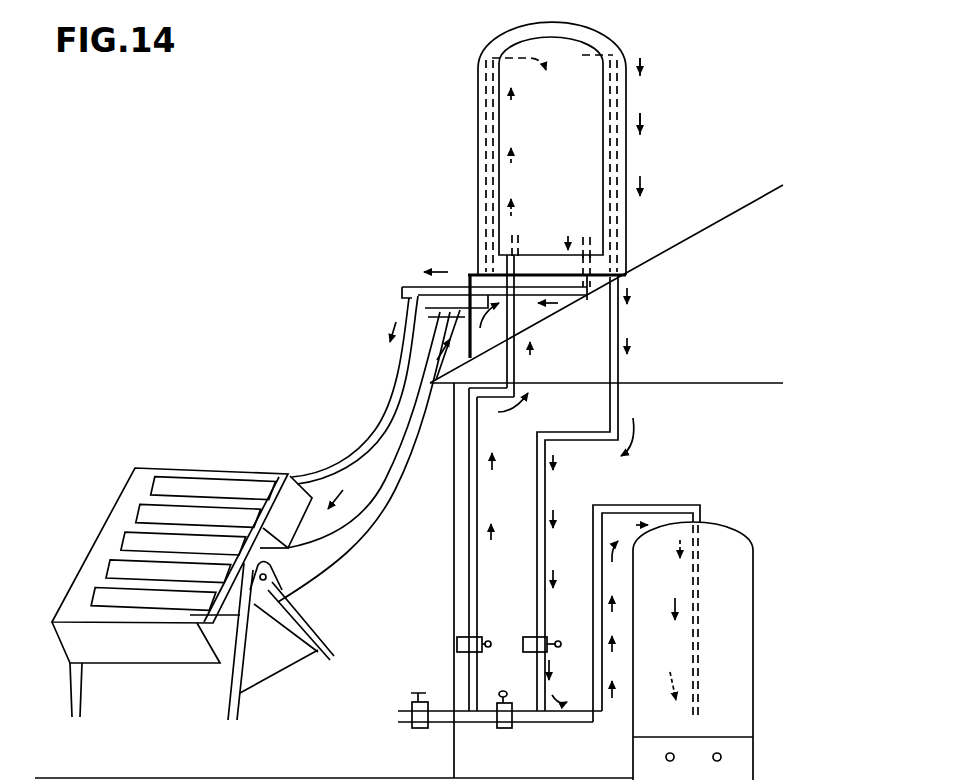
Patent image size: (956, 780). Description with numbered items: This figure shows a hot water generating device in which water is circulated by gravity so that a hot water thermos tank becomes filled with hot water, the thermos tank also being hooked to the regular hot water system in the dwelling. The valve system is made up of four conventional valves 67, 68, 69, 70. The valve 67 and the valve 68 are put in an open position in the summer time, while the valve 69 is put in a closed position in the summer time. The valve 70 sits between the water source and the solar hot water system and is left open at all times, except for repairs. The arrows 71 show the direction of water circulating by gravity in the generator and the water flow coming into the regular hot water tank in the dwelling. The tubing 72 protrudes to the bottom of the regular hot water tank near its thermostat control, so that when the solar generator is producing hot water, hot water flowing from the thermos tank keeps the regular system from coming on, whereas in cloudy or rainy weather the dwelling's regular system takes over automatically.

The conventional valve 67 is at (489, 638).
The conventional valve 68 is at (558, 638).
The conventional valve 69 is at (512, 678).
The conventional valve 70 is at (418, 692).
The direction of water circulating by gravity 71 is at (350, 428).
The tubing protruding to bottom of tank 72 is at (705, 612).